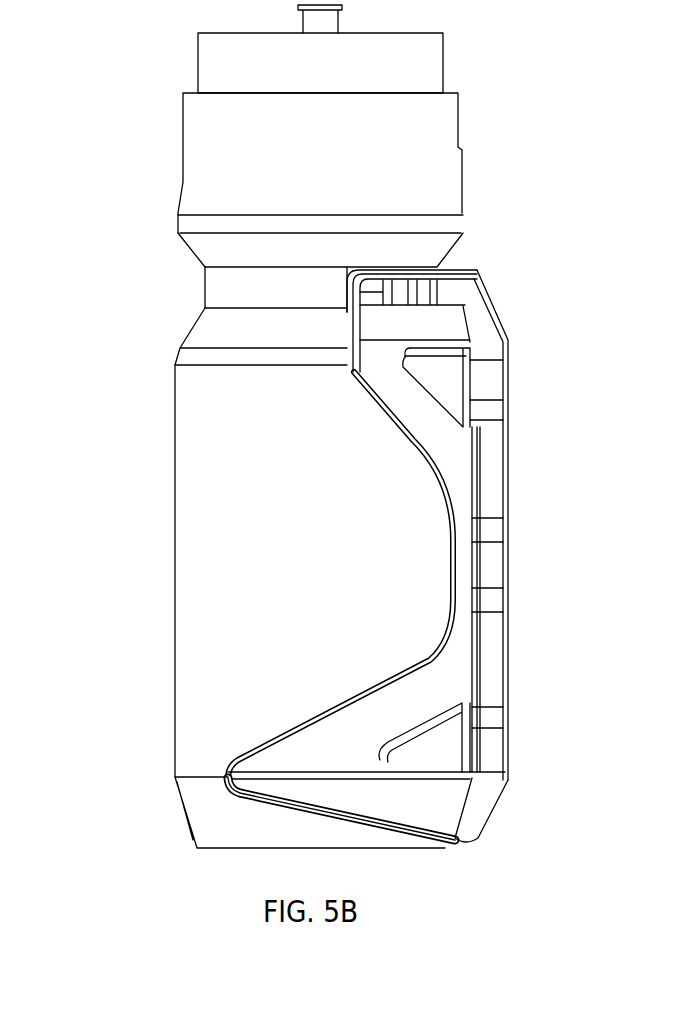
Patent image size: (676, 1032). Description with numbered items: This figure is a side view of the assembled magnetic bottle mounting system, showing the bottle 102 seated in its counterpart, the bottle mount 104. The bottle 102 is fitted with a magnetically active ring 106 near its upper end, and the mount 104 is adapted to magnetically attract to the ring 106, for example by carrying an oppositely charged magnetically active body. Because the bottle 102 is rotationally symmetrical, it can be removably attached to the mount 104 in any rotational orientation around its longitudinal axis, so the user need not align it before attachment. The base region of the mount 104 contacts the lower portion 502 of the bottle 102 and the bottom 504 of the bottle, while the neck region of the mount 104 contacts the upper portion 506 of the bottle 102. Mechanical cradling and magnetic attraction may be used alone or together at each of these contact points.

The bottle 102 is at (427, 135).
The bottle mount 104 is at (492, 503).
The magnetically active ring 106 is at (255, 296).
The lower portion of the bottle 502 is at (160, 752).
The bottom of the bottle 504 is at (203, 810).
The upper portion of the bottle 506 is at (140, 328).